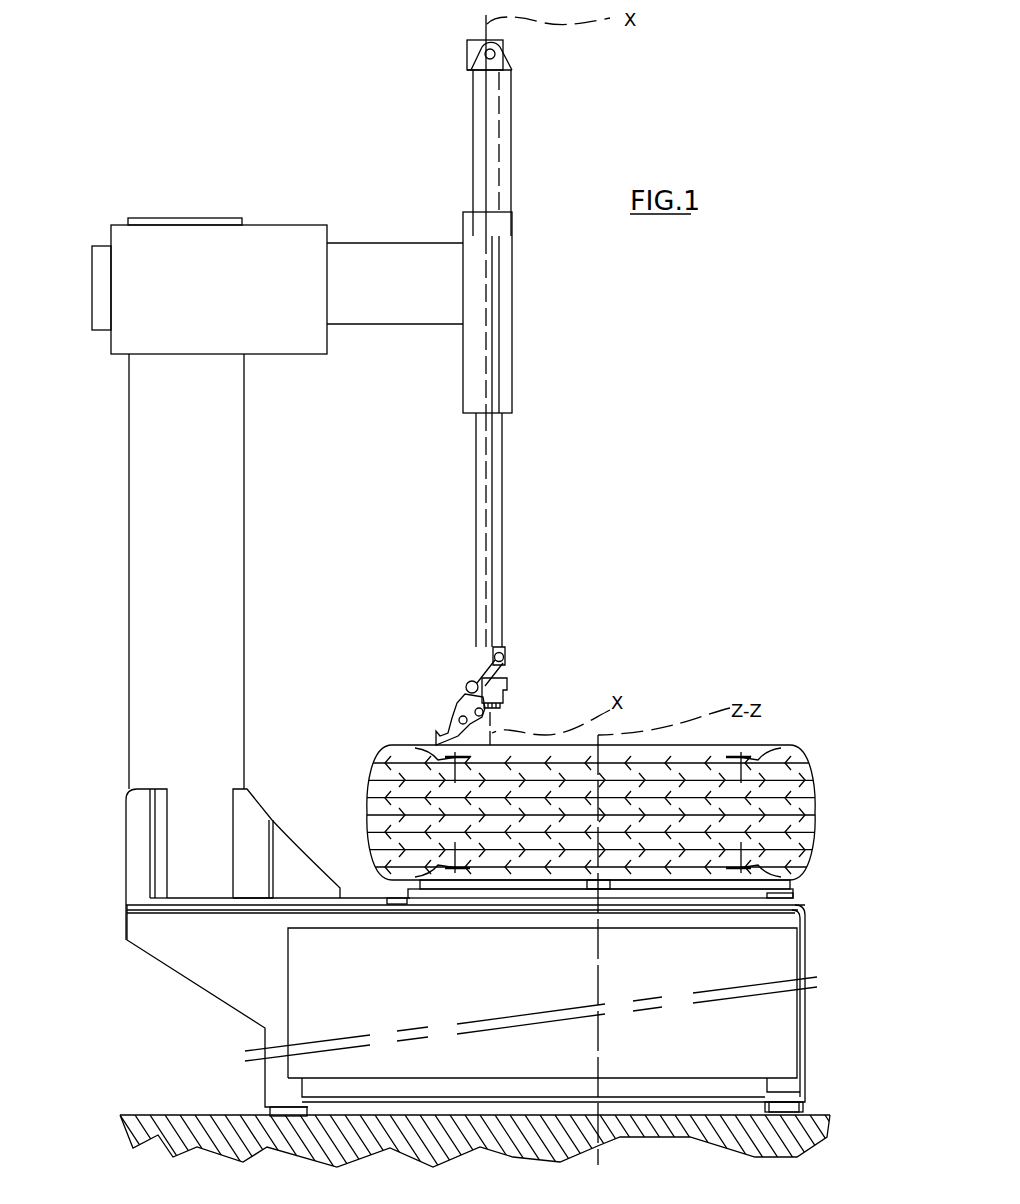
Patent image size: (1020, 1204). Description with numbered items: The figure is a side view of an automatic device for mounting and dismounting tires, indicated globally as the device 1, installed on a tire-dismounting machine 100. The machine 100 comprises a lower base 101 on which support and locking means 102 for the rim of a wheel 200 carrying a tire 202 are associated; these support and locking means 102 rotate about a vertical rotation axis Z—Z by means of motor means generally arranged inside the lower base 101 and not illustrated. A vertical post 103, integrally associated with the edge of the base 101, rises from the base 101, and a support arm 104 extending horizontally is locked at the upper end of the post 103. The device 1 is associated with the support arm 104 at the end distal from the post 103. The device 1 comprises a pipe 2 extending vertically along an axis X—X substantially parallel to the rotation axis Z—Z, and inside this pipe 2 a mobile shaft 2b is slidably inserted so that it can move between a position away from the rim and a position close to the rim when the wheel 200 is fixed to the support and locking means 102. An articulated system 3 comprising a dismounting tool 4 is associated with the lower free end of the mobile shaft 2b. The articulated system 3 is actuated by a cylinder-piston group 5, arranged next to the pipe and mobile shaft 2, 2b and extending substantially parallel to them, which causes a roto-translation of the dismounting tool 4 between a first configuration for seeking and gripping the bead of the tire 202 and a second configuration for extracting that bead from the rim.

The automatic device for mounting and dismounting tires 1 is at (522, 373).
The pipe 2 is at (470, 374).
The mobile shaft 2b is at (502, 490).
The articulated system 3 is at (454, 629).
The dismounting tool 4 is at (440, 717).
The cylinder-piston group 5 is at (519, 182).
The tire-dismounting machine 100 is at (483, 758).
The lower base 101 is at (748, 1040).
The support and locking means 102 is at (790, 893).
The vertical post 103 is at (167, 217).
The support arm 104 is at (384, 243).
The wheel 200 is at (602, 746).
The tire 202 is at (812, 803).